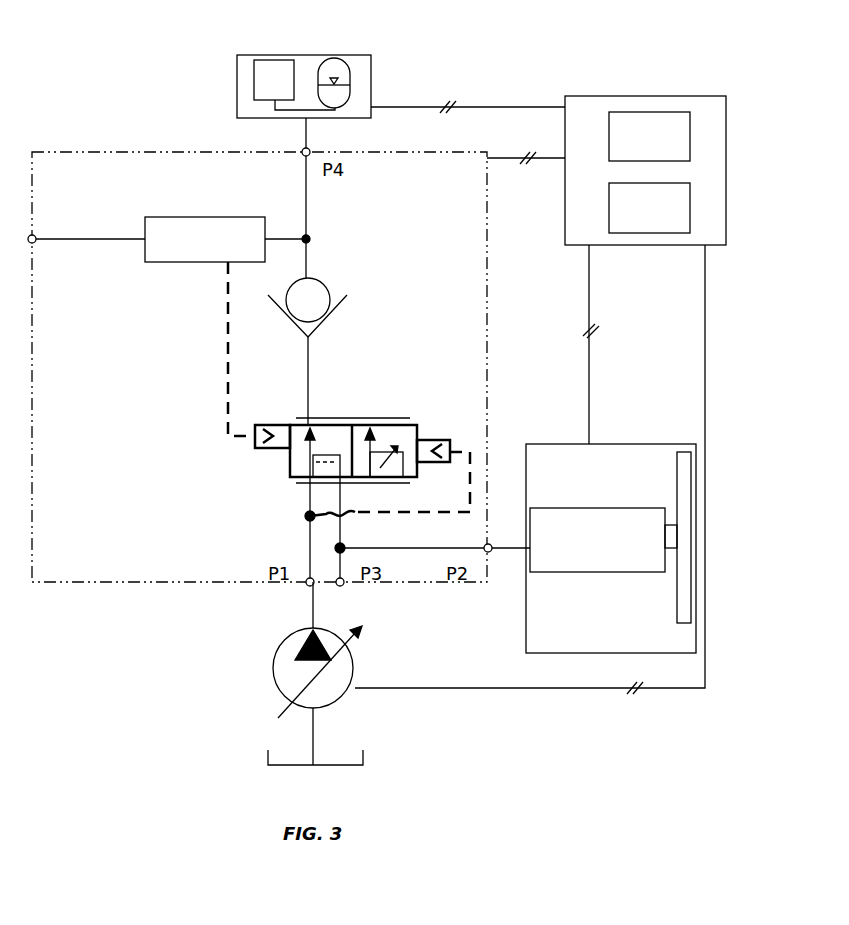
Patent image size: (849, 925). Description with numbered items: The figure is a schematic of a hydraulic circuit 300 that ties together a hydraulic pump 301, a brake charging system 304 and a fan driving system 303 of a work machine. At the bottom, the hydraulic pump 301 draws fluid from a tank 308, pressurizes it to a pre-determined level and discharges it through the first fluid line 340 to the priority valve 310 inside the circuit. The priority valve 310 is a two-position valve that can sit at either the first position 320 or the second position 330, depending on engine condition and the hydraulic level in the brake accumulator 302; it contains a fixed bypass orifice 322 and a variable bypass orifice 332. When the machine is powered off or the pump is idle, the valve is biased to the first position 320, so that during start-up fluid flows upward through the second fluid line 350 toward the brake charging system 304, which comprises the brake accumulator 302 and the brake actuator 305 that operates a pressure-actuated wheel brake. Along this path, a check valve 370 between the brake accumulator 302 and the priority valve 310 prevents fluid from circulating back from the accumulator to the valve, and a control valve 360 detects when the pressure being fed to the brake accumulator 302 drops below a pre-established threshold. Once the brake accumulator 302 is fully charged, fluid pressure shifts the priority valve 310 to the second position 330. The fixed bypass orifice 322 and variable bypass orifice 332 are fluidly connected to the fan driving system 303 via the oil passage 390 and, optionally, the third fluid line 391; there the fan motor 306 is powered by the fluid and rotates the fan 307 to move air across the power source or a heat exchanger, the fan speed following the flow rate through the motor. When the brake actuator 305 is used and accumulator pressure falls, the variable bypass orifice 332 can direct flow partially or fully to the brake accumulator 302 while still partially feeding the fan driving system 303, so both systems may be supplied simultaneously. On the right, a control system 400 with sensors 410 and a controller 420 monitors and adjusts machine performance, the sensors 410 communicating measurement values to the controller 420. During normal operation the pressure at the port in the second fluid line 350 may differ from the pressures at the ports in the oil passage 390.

The hydraulic circuit 300 is at (487, 291).
The hydraulic pump 301 is at (354, 650).
The brake accumulator 302 is at (340, 62).
The fan driving system 303 is at (611, 523).
The brake charging system 304 is at (371, 80).
The brake actuator 305 is at (254, 72).
The fan motor 306 is at (600, 575).
The fan 307 is at (676, 610).
The tank 308 is at (363, 752).
The priority valve 310 is at (417, 422).
The first position 320 is at (300, 470).
The fixed bypass orifice 322 is at (328, 452).
The second position 330 is at (450, 484).
The variable bypass orifice 332 is at (384, 452).
The first fluid line 340 is at (310, 536).
The second fluid line 350 is at (312, 208).
The control valve 360 is at (190, 217).
The check valve 370 is at (326, 282).
The oil passage 390 is at (343, 532).
The third fluid line 391 is at (506, 552).
The control system 400 is at (725, 96).
The sensors 410 is at (690, 128).
The controller 420 is at (690, 202).